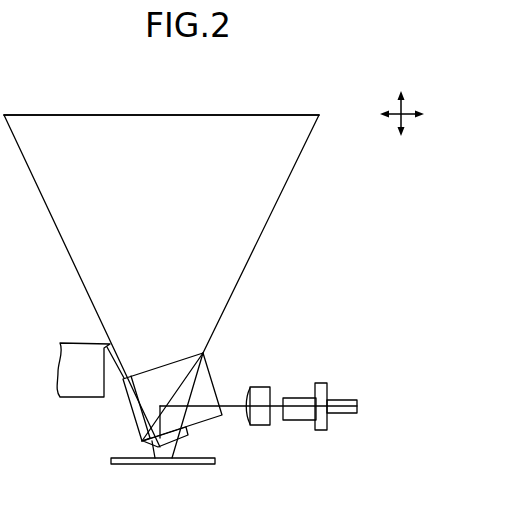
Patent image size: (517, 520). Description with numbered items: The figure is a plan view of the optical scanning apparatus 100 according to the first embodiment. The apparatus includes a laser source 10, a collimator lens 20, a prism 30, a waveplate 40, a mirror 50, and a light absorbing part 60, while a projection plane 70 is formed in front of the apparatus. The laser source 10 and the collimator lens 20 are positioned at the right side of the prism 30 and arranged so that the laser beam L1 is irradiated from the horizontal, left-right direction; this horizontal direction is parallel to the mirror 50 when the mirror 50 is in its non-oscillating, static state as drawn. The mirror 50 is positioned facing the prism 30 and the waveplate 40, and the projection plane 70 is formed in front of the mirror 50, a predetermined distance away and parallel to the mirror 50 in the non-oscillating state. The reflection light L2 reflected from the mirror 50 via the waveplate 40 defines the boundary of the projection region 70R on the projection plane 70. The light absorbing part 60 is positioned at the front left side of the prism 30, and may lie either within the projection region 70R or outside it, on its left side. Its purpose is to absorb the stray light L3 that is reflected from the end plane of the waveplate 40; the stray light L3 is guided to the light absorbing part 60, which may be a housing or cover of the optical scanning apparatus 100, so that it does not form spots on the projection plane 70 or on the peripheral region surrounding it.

The optical scanning apparatus 100 is at (5, 70).
The projection plane 70 is at (180, 114).
The projection region 70R is at (264, 166).
The reflection light L2 is at (265, 229).
The light absorbing part 60 is at (78, 342).
The prism 30 is at (215, 377).
The stray light L3 is at (148, 405).
The laser beam L1 is at (233, 408).
The collimator lens 20 is at (260, 386).
The laser source 10 is at (300, 399).
The waveplate 40 is at (187, 433).
The mirror 50 is at (112, 460).